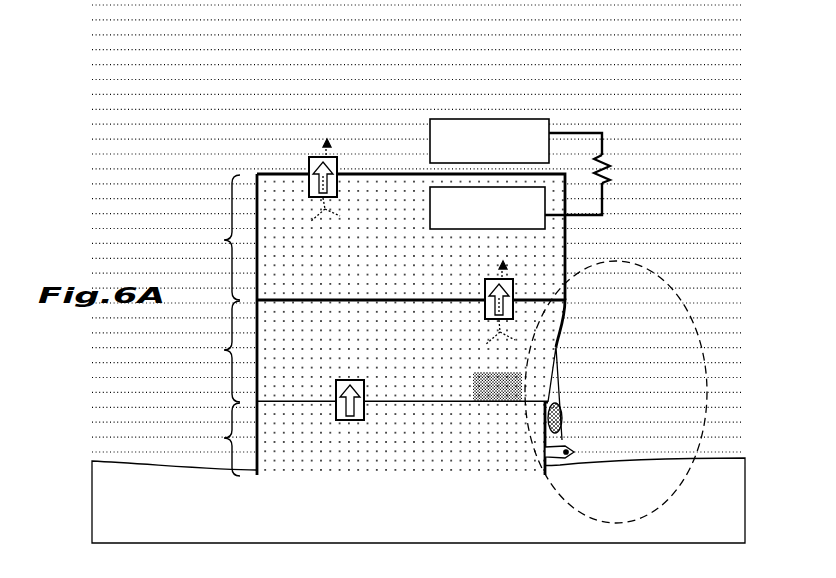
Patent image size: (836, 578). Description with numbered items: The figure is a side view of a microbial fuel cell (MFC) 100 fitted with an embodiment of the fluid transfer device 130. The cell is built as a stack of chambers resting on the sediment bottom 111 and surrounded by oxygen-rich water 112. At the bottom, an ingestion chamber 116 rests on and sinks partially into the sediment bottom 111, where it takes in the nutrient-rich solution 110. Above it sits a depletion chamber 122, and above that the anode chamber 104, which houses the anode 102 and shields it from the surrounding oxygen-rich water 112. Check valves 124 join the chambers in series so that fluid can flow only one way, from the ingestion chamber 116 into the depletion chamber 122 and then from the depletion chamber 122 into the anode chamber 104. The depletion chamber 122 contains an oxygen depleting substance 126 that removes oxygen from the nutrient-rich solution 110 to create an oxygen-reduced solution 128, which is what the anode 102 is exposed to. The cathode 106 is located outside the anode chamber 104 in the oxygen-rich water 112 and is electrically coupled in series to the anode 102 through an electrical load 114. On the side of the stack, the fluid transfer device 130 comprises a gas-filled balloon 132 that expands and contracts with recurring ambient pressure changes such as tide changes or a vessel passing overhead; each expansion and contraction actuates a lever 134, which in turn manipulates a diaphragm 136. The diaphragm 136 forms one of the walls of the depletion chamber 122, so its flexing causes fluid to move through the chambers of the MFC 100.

The microbial fuel cell 100 is at (652, 79).
The anode 102 is at (430, 215).
The anode chamber 104 is at (365, 237).
The cathode 106 is at (430, 150).
The nutrient-rich solution 110 is at (429, 442).
The sediment bottom 111 is at (420, 527).
The oxygen-rich water 112 is at (228, 45).
The electrical load 114 is at (612, 162).
The ingestion chamber 116 is at (356, 325).
The depletion chamber 122 is at (366, 351).
The check valves 124 is at (309, 163).
The oxygen depleting substance 126 is at (473, 388).
The oxygen-reduced solution 128 is at (317, 279).
The fluid transfer device 130 is at (688, 317).
The gas-filled balloon 132 is at (564, 443).
The lever 134 is at (563, 393).
The diaphragm 136 is at (557, 330).